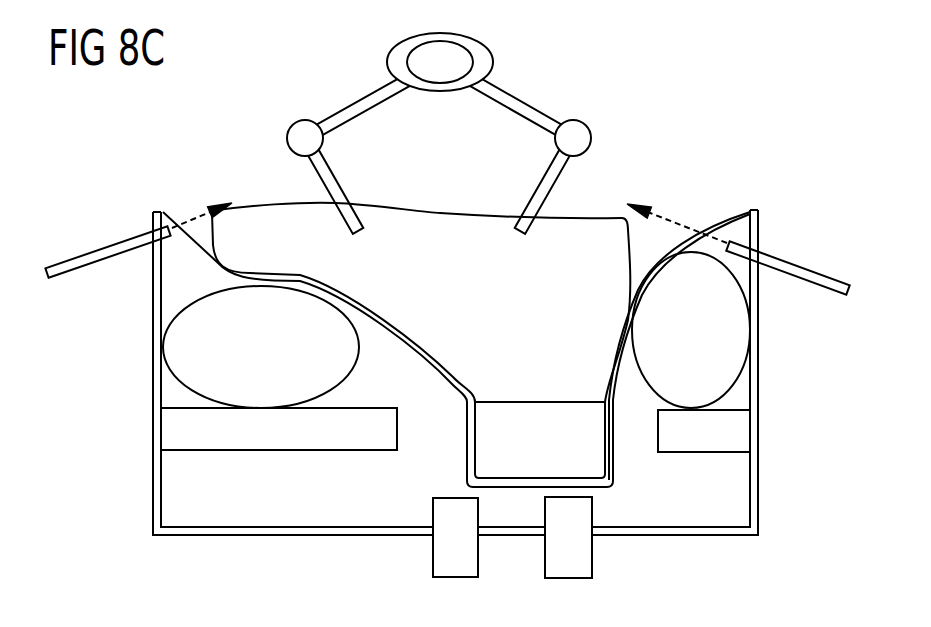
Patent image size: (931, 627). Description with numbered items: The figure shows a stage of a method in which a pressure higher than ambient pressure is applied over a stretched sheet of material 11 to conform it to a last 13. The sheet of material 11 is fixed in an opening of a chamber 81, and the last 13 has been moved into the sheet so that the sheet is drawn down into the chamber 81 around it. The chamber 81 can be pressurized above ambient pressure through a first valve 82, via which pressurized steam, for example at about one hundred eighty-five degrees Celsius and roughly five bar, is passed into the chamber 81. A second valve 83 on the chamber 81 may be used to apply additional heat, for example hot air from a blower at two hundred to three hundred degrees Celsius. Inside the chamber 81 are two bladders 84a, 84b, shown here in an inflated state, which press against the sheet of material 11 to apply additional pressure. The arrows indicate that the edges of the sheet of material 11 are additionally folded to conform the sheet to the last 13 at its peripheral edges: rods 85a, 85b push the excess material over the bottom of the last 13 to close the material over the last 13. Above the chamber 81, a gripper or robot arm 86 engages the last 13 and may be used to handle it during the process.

The sheet of material 11 is at (720, 218).
The last 13 is at (435, 230).
The chamber 81 is at (153, 487).
The first valve 82 is at (443, 552).
The second valve 83 is at (577, 553).
The bladder 84a is at (187, 347).
The bladder 84b is at (725, 347).
The rod 85a is at (108, 252).
The rod 85b is at (792, 257).
The gripper or robot arm 86 is at (528, 103).